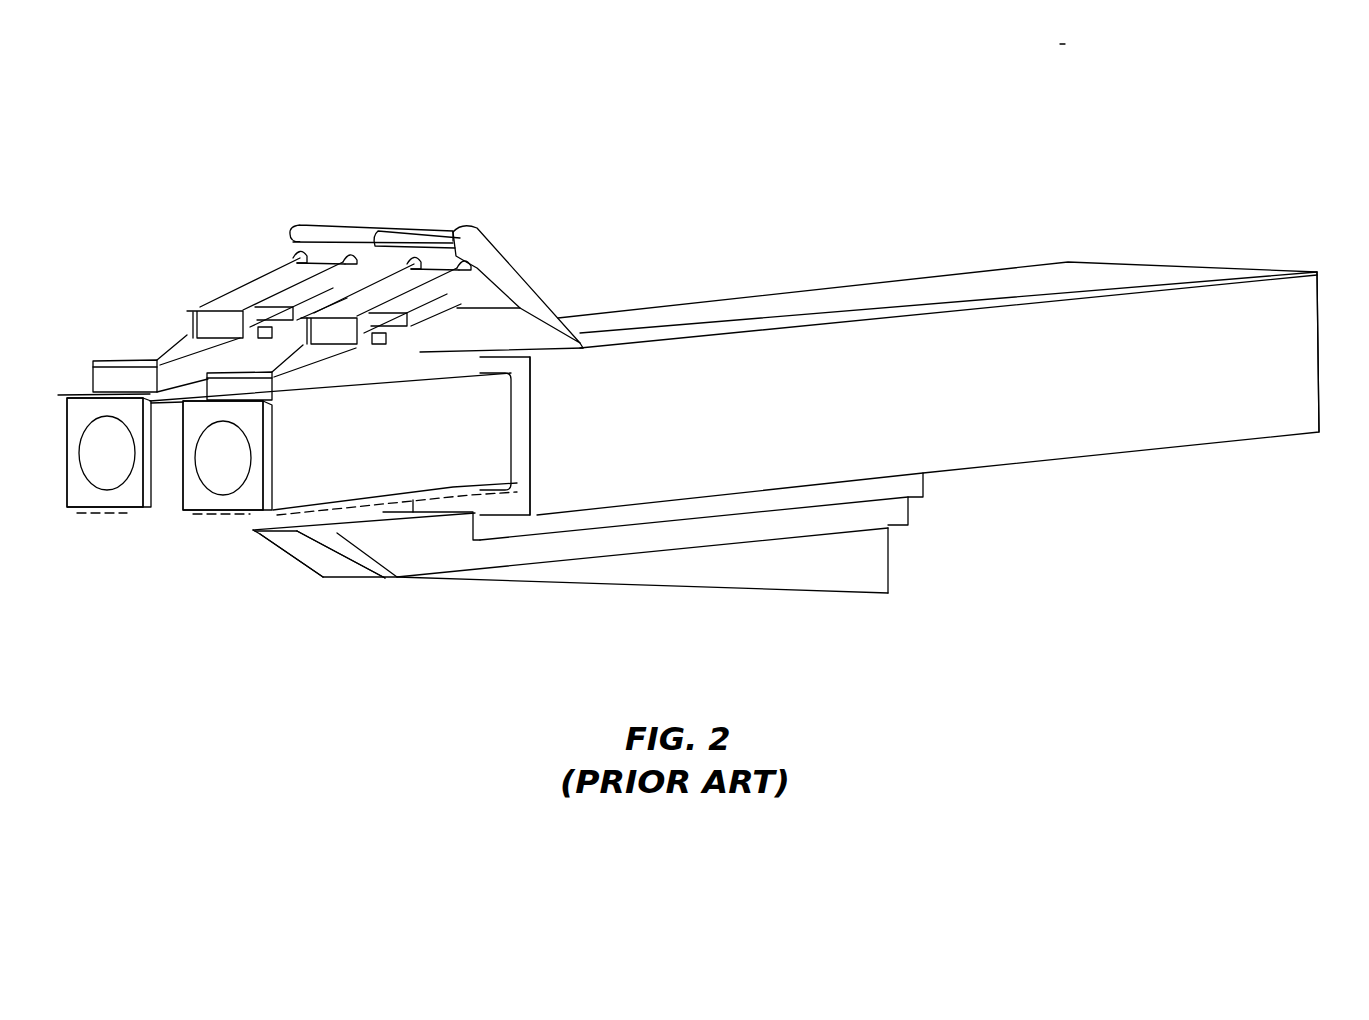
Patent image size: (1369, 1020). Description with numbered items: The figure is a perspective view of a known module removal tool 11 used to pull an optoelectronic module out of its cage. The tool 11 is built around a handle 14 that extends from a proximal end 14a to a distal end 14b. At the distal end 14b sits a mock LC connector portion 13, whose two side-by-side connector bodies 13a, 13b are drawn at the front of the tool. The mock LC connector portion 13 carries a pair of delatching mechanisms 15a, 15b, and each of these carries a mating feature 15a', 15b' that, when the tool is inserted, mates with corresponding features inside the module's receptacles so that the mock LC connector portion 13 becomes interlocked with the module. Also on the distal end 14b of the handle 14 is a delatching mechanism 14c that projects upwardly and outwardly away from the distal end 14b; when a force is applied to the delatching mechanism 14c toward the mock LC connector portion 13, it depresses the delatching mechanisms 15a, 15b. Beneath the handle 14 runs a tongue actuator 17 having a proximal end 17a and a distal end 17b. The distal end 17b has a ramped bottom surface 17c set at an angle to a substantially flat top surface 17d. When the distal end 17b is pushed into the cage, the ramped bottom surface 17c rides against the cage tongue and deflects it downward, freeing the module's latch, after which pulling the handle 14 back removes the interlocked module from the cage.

The module removal tool 11 is at (919, 129).
The mock LC connector portion 13 is at (140, 500).
The first connector 13a is at (85, 475).
The second connector 13b is at (200, 480).
The handle 14 is at (823, 312).
The proximal end 14a is at (1310, 400).
The distal end 14b is at (520, 488).
The delatching mechanism 14c is at (507, 258).
The delatching mechanism 15a is at (293, 250).
The mating feature 15a' is at (338, 233).
The delatching mechanism 15b is at (397, 264).
The mating feature 15b' is at (454, 241).
The tongue actuator 17 is at (620, 595).
The proximal end 17a is at (893, 541).
The distal end 17b is at (290, 530).
The ramped bottom surface 17c is at (322, 543).
The substantially flat top surface 17d is at (378, 516).